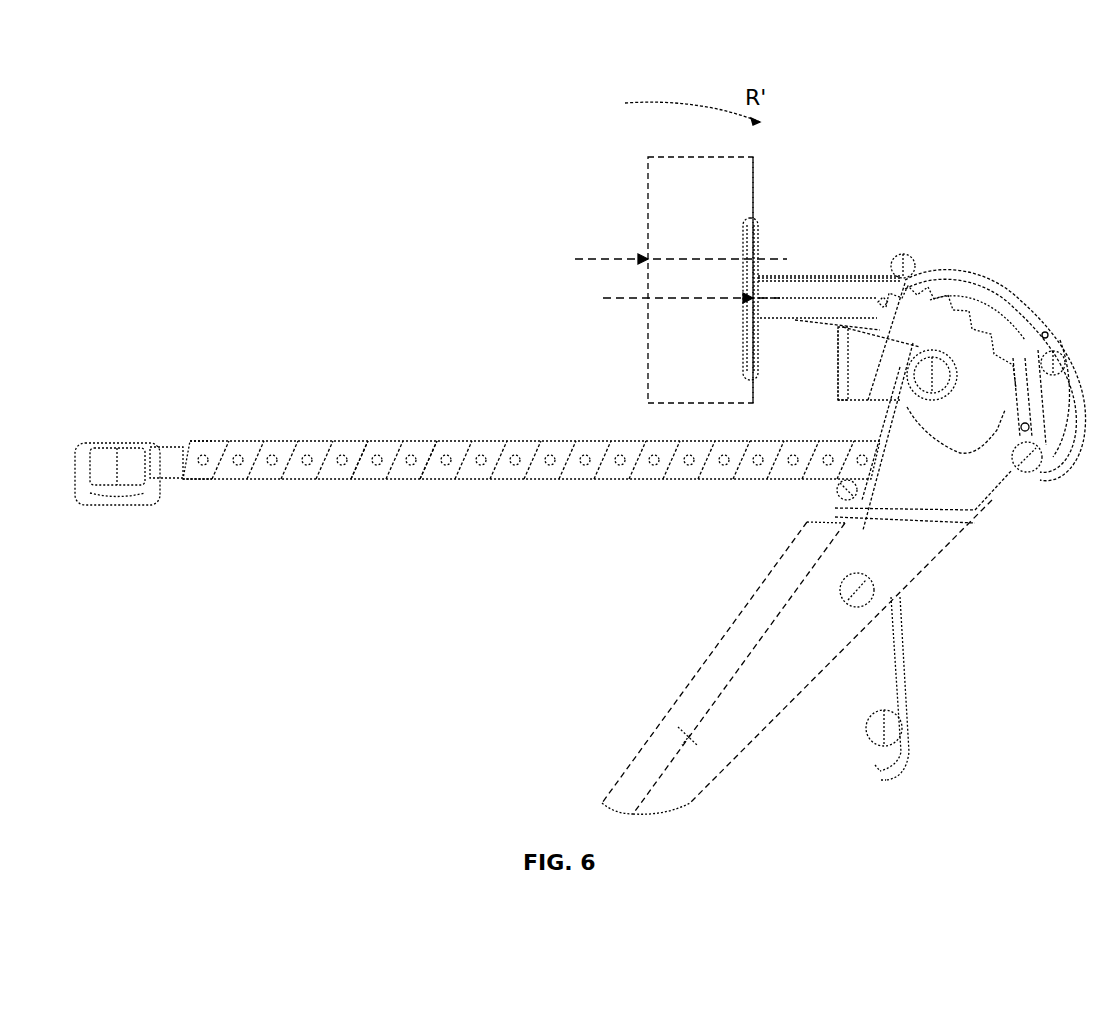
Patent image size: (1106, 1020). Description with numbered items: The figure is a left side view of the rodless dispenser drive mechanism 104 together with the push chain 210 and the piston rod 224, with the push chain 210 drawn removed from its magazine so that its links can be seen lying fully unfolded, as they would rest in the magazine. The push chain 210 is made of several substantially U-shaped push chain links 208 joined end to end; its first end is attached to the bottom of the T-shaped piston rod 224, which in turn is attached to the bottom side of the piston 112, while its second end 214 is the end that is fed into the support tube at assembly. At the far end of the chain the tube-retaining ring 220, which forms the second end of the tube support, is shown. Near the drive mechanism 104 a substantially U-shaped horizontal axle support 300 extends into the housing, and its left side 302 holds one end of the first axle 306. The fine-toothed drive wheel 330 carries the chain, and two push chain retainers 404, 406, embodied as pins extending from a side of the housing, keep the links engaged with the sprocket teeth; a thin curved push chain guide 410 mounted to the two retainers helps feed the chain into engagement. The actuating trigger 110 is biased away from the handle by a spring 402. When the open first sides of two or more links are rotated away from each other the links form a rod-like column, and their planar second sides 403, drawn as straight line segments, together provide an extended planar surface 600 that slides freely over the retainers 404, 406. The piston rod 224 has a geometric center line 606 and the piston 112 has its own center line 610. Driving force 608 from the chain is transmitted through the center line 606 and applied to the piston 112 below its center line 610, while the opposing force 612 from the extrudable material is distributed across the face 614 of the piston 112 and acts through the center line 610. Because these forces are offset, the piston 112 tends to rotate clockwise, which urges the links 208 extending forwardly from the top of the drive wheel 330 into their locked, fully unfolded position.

The push chain drive mechanism 104 is at (1000, 210).
The actuating trigger 110 is at (690, 713).
The piston 112 is at (755, 157).
The push chain links 208 is at (368, 441).
The push chain 210 is at (535, 494).
The second end of the push chain 214 is at (205, 441).
The tube-retaining ring 220 is at (100, 505).
The piston rod 224 is at (787, 278).
The horizontal axle support 300 is at (829, 338).
The left side of the axle support 302 is at (852, 393).
The first axle 306 is at (921, 378).
The fine-toothed drive wheel 330 is at (976, 318).
The spring 402 is at (345, 434).
The second sides of the chain links 403 is at (335, 479).
The push chain retainer 404 is at (905, 255).
The push chain retainer 406 is at (838, 493).
The push chain guide 410 is at (975, 282).
The planar surface 600 is at (513, 479).
The geometric center line of the piston rod 606 is at (627, 298).
The driving force 608 is at (767, 293).
The center line of the piston 610 is at (590, 259).
The opposing force 612 is at (627, 259).
The face of the piston 614 is at (646, 187).